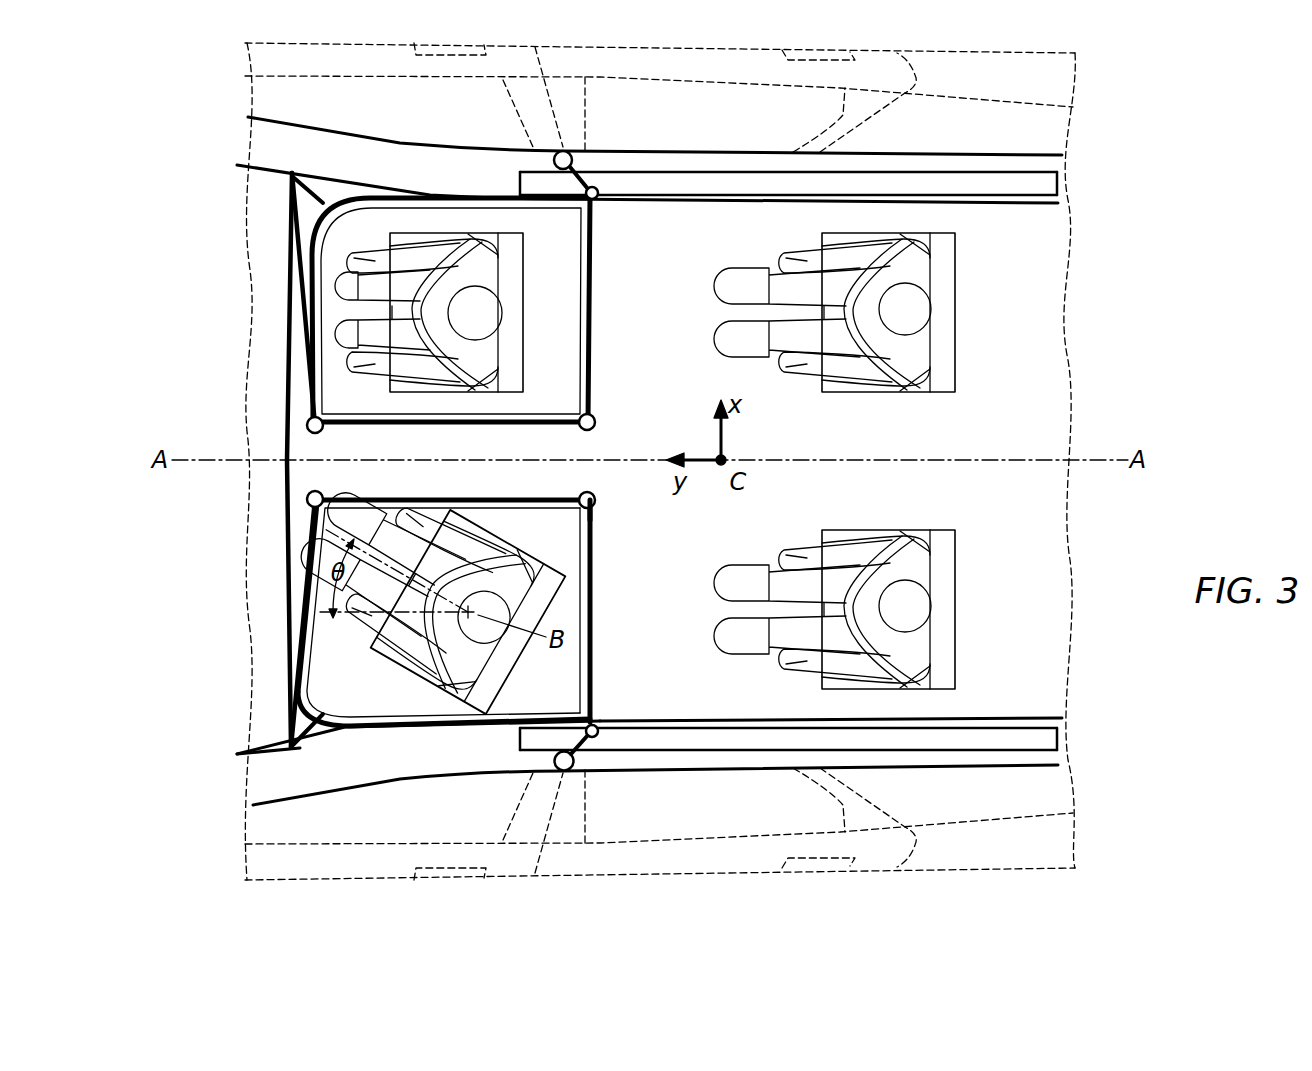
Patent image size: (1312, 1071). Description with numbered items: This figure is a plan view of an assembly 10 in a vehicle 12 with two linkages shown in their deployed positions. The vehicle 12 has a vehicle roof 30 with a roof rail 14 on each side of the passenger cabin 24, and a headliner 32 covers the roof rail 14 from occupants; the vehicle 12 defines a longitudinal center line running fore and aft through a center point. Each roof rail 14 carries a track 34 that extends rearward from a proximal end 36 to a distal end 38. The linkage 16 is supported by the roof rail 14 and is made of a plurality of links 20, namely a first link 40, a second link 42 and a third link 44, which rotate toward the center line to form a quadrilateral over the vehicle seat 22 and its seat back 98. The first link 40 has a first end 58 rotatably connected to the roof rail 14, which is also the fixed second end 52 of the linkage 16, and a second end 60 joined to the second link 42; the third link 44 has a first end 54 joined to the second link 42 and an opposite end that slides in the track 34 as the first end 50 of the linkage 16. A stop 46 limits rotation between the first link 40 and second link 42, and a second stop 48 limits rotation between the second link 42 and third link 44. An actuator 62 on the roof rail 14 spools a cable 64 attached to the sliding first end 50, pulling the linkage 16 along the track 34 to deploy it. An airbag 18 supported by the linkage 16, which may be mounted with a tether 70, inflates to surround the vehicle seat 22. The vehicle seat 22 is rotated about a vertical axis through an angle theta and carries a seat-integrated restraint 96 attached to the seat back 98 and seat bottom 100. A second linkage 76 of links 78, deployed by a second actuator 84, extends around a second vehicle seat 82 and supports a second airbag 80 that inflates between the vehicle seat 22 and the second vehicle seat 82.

The assembly 10 is at (198, 764).
The vehicle 12 is at (190, 192).
The roof rail 14 is at (1007, 165).
The linkage 16 is at (297, 533).
The airbag 18 is at (340, 733).
The links 20 is at (590, 395).
The vehicle seat 22 is at (508, 665).
The passenger cabin 24 is at (1030, 313).
The vehicle roof 30 is at (703, 151).
The headliner 32 is at (1058, 204).
The track 34 is at (918, 172).
The proximal end 36 is at (520, 188).
The distal end 38 is at (1058, 183).
The first link 40 is at (300, 627).
The second link 42 is at (545, 497).
The third link 44 is at (592, 625).
The stop 46 is at (313, 503).
The second stop 48 is at (592, 497).
The first end 50 is at (593, 735).
The second end 52 is at (290, 750).
The first end 54 is at (590, 505).
The first end 58 is at (292, 750).
The second end 60 is at (310, 495).
The actuator 62 is at (566, 775).
The cable 64 is at (582, 750).
The tether 70 is at (298, 717).
The second linkage 76 is at (298, 396).
The links 78 is at (290, 313).
The second airbag 80 is at (330, 200).
The second vehicle seat 82 is at (516, 258).
The second actuator 84 is at (568, 153).
The seat-integrated restraint 96 is at (448, 662).
The seat back 98 is at (578, 590).
The seat bottom 100 is at (543, 585).